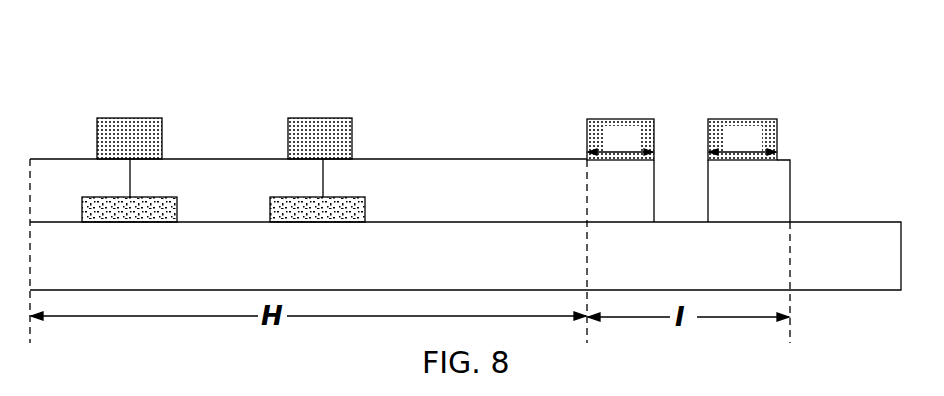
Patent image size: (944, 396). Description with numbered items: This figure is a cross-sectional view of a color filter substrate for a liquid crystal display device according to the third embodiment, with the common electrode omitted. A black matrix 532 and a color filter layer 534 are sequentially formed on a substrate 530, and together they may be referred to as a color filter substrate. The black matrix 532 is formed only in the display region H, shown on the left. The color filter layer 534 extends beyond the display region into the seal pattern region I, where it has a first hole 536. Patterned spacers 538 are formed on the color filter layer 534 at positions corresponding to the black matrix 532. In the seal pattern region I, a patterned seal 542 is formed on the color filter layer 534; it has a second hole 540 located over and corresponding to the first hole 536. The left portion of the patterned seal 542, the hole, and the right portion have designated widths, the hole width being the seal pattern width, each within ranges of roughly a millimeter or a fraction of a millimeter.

The substrate 530 is at (89, 269).
The black matrix 532 is at (146, 224).
The color filter layer 534 is at (50, 168).
The first hole 536 is at (684, 188).
The patterned spacers 538 is at (133, 130).
The second hole 540 is at (683, 120).
The patterned seal 542 is at (620, 117).